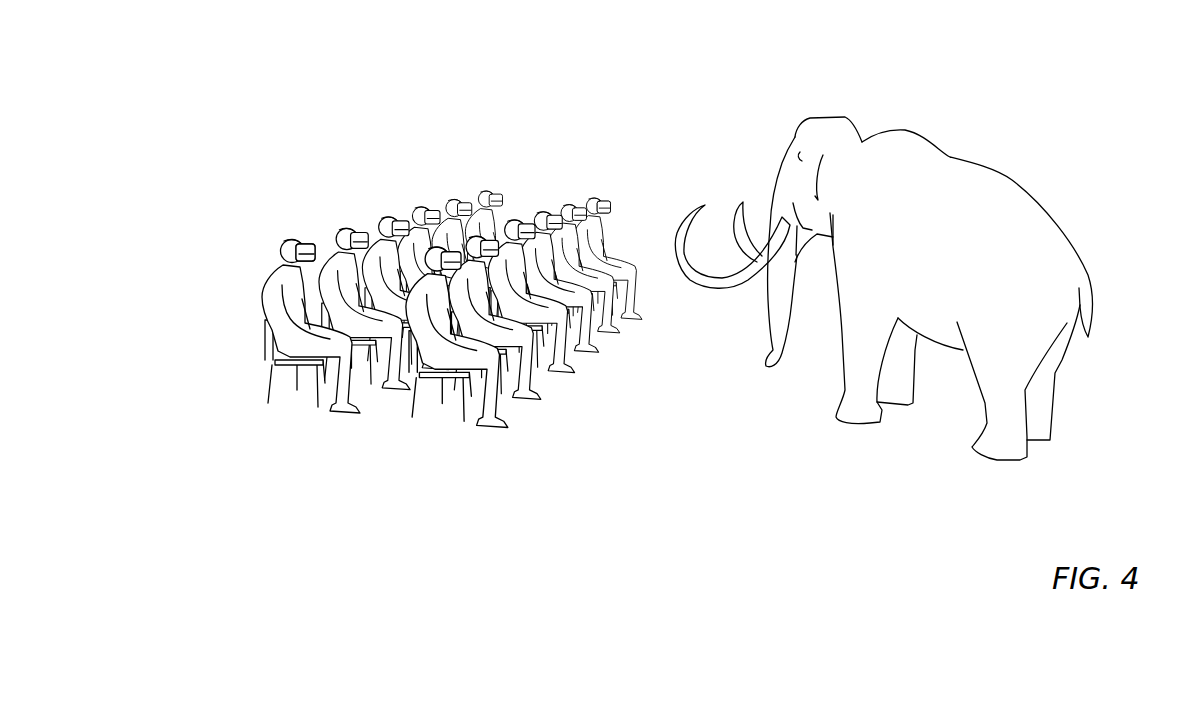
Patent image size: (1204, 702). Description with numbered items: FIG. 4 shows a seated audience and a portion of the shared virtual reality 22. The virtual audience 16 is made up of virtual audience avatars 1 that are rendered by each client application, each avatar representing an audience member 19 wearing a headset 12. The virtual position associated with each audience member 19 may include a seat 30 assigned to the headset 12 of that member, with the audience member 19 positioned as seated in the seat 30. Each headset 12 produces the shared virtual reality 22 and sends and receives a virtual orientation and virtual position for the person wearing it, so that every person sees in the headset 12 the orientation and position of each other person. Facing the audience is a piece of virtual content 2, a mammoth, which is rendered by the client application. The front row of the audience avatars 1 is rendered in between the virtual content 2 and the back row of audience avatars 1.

The virtual audience avatars 1 is at (287, 317).
The piece of virtual content 2 is at (883, 288).
The headset 12 is at (308, 250).
The virtual audience 16 is at (430, 278).
The audience member 19 is at (290, 370).
The virtual reality 22 is at (883, 245).
The seat 30 is at (336, 392).